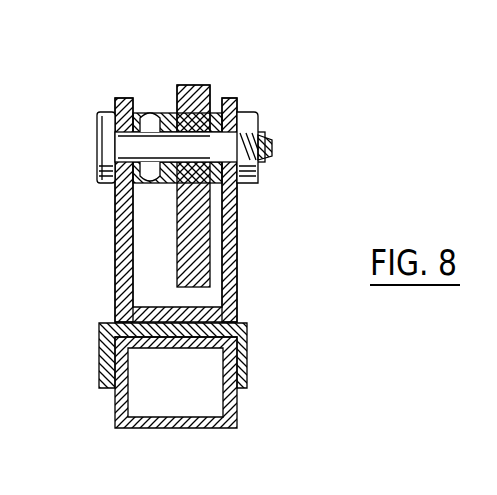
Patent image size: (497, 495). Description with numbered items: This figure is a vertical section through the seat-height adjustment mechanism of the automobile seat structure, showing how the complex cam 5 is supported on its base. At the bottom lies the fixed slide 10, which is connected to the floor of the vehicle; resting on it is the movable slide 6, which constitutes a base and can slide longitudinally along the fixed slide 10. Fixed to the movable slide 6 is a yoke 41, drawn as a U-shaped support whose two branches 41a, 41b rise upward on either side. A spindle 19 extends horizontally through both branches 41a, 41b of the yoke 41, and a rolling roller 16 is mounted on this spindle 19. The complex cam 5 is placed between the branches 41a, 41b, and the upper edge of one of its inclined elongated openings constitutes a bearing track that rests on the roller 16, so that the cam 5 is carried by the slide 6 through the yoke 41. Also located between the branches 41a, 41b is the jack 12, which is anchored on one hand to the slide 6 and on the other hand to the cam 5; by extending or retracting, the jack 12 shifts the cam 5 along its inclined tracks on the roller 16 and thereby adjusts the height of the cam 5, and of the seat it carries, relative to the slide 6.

The complex cam 5 is at (192, 84).
The movable slide 6 is at (247, 345).
The fixed slide 10 is at (247, 390).
The jack 12 is at (151, 113).
The rolling roller 16 is at (209, 98).
The spindle 19 is at (262, 142).
The yoke 41 is at (113, 252).
The branch of the yoke 41a is at (124, 212).
The branch of the yoke 41b is at (237, 230).